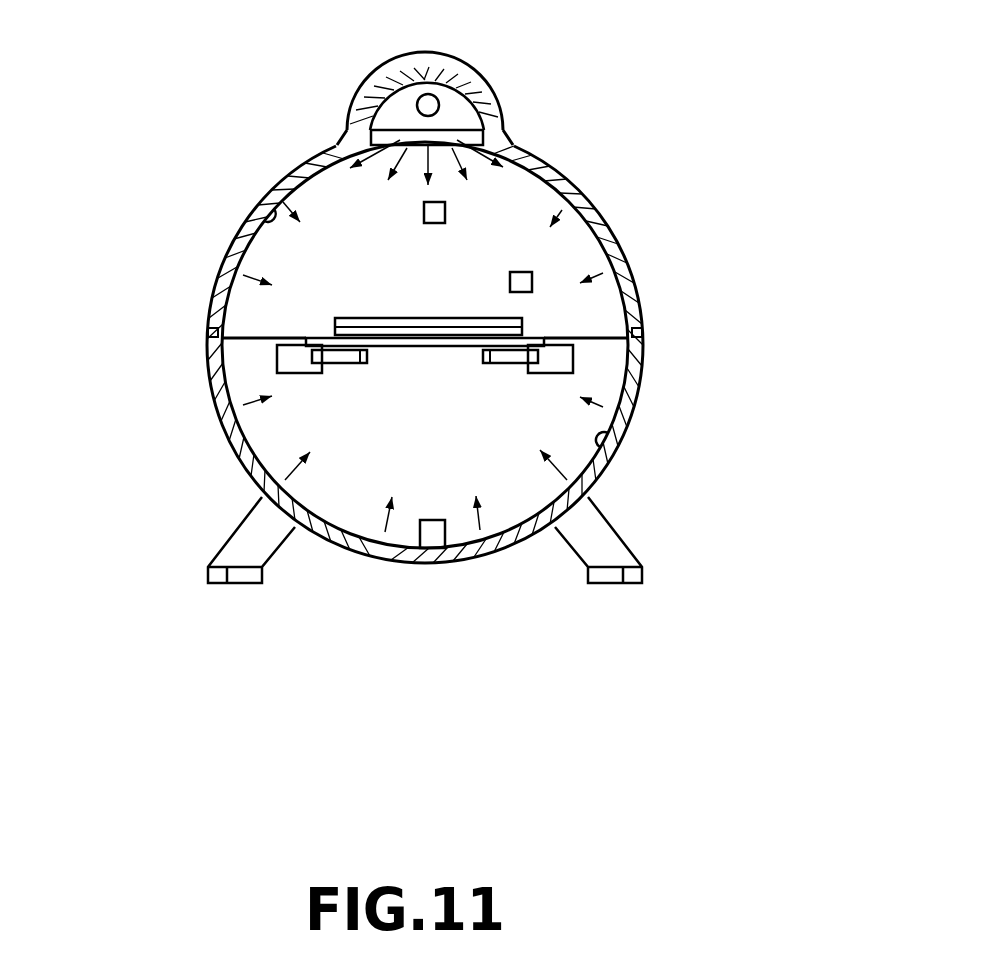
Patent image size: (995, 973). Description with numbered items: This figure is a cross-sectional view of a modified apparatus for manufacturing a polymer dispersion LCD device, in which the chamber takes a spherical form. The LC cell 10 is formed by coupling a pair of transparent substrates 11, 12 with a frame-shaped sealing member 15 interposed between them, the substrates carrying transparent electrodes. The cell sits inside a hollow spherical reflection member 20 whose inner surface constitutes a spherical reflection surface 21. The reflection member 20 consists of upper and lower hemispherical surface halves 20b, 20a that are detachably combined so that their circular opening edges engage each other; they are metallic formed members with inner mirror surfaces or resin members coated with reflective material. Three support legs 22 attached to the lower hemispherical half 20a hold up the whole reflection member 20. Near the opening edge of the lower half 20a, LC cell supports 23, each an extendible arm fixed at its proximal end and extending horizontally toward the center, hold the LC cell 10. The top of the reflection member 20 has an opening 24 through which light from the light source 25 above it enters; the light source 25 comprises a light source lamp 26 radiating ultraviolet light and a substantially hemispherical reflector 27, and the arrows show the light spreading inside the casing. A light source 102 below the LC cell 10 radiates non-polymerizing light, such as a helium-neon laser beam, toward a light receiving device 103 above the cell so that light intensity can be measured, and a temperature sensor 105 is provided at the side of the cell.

The LC cell 10 is at (514, 316).
The transparent substrate 11 is at (365, 318).
The transparent substrate 12 is at (258, 461).
The sealing member 15 is at (432, 318).
The reflection member 20 is at (599, 199).
The lower hemispherical surface half 20a is at (218, 428).
The upper hemispherical surface half 20b is at (282, 168).
The spherical reflection surface 21 is at (263, 216).
The support leg 22 is at (215, 556).
The LC cell support 23 is at (335, 366).
The opening 24 is at (384, 96).
The light source 25 is at (494, 90).
The light source lamp 26 is at (420, 98).
The reflector 27 is at (457, 73).
The light source for measuring light intensity 102 is at (433, 527).
The light receiving device 103 is at (447, 208).
The temperature sensor 105 is at (533, 274).